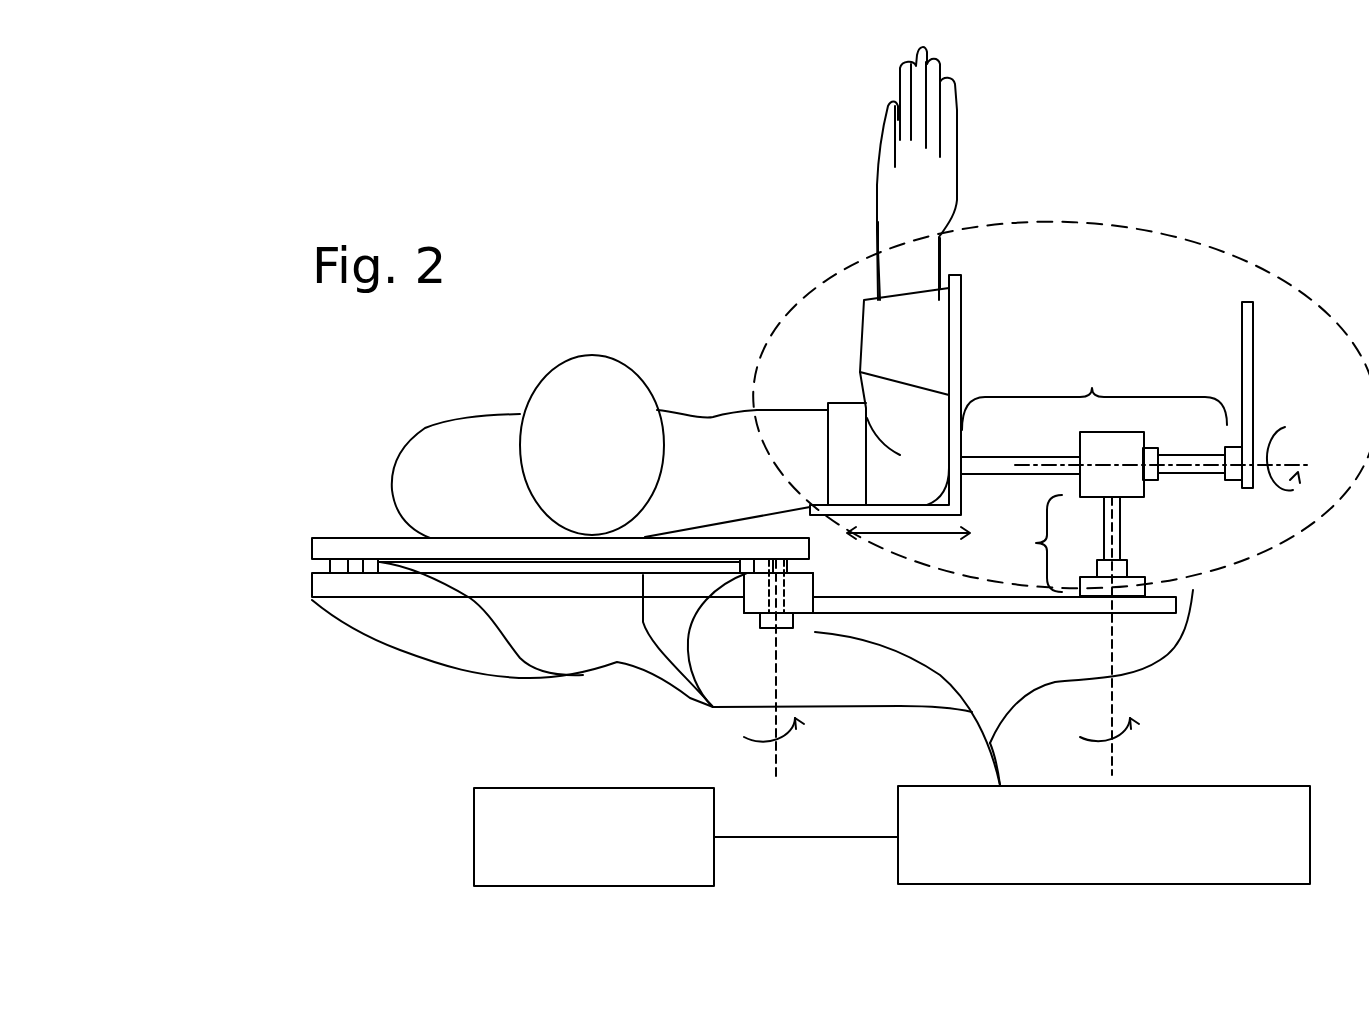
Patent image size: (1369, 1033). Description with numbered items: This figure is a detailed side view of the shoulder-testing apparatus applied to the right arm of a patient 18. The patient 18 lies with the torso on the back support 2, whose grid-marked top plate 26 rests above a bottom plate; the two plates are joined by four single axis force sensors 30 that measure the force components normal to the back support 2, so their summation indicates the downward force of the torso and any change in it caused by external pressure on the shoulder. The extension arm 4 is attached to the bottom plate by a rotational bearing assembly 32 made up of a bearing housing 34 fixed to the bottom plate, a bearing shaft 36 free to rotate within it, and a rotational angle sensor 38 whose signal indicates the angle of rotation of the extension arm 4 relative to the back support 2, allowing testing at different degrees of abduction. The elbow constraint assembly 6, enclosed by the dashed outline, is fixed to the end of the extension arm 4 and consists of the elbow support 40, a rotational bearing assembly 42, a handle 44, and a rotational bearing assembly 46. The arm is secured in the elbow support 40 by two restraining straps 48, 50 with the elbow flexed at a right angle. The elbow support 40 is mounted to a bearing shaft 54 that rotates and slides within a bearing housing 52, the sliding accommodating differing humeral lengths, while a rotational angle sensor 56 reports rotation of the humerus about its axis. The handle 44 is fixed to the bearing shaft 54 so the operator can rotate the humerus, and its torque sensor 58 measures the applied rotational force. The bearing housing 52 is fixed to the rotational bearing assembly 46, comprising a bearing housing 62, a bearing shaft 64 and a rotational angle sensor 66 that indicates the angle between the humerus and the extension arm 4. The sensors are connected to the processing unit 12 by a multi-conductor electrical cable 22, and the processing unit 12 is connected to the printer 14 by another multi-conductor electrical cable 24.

The back support 2 is at (514, 565).
The extension arm 4 is at (900, 606).
The elbow constraint assembly 6 is at (1093, 222).
The processing unit 12 is at (1132, 827).
The printer 14 is at (527, 840).
The patient 18 is at (460, 455).
The multi-conductor electrical cable 22 is at (1000, 770).
The multi-conductor electrical cable 24 is at (770, 838).
The top plate 26 is at (323, 550).
The single axis force sensors 30 is at (302, 540).
The rotational bearing assembly 32 is at (827, 600).
The bearing housing 34 is at (757, 585).
The bearing shaft 36 is at (752, 602).
The rotational angle sensor 38 is at (764, 619).
The elbow support 40 is at (957, 347).
The rotational bearing assembly 42 is at (1092, 388).
The handle 44 is at (1245, 337).
The rotational bearing assembly 46 is at (910, 277).
The restraining strap 48 is at (887, 348).
The restraining strap 50 is at (847, 420).
The bearing housing 52 is at (1108, 443).
The bearing shaft 54 is at (975, 465).
The rotational angle sensor 56 is at (1153, 458).
The torque sensor 58 is at (1232, 450).
The bearing housing 62 is at (1093, 589).
The bearing shaft 64 is at (1108, 525).
The rotational angle sensor 66 is at (1105, 567).